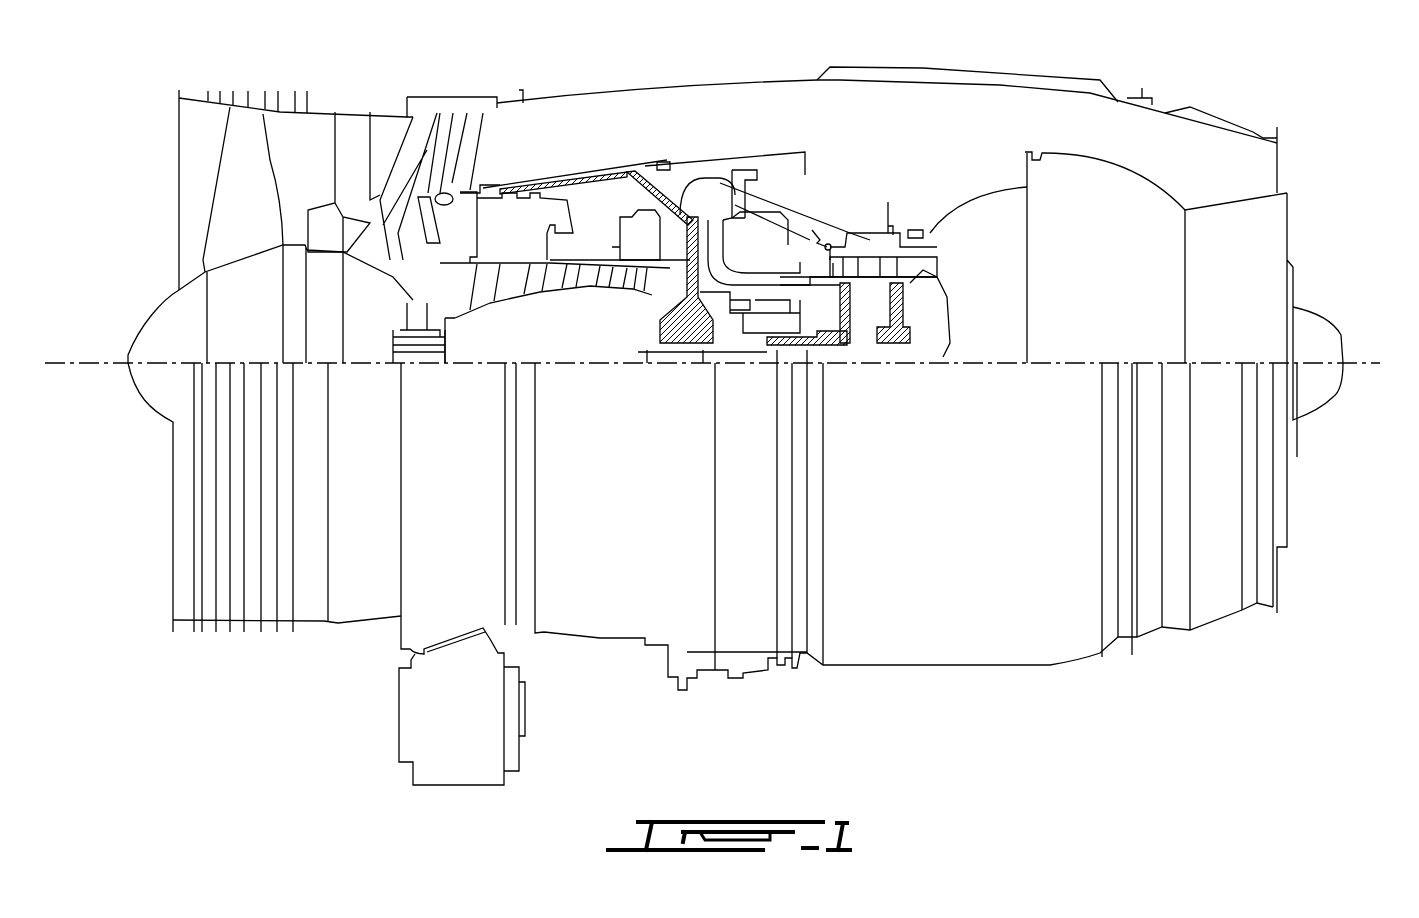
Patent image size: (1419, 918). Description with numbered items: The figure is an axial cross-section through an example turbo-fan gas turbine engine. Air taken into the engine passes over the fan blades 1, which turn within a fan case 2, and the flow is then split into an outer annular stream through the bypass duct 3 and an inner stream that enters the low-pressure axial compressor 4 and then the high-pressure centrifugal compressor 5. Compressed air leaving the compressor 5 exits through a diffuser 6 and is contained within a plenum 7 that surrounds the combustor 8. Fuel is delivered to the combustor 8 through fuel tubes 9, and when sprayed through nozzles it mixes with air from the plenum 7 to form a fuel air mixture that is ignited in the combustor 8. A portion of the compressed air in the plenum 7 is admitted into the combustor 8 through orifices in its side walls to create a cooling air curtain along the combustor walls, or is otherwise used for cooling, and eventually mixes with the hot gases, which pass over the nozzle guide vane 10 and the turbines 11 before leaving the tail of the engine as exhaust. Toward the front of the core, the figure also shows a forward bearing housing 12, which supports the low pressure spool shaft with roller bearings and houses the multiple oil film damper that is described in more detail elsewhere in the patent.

The fan blades 1 is at (252, 211).
The fan case 2 is at (307, 97).
The bypass duct 3 is at (595, 144).
The low-pressure axial compressor 4 is at (490, 302).
The high-pressure centrifugal compressor 5 is at (652, 293).
The diffuser 6 is at (712, 190).
The plenum 7 is at (783, 233).
The combustor 8 is at (770, 264).
The fuel tubes 9 is at (750, 203).
The nozzle guide vane 10 is at (843, 247).
The turbines 11 is at (860, 247).
The forward bearing housing 12 is at (418, 353).